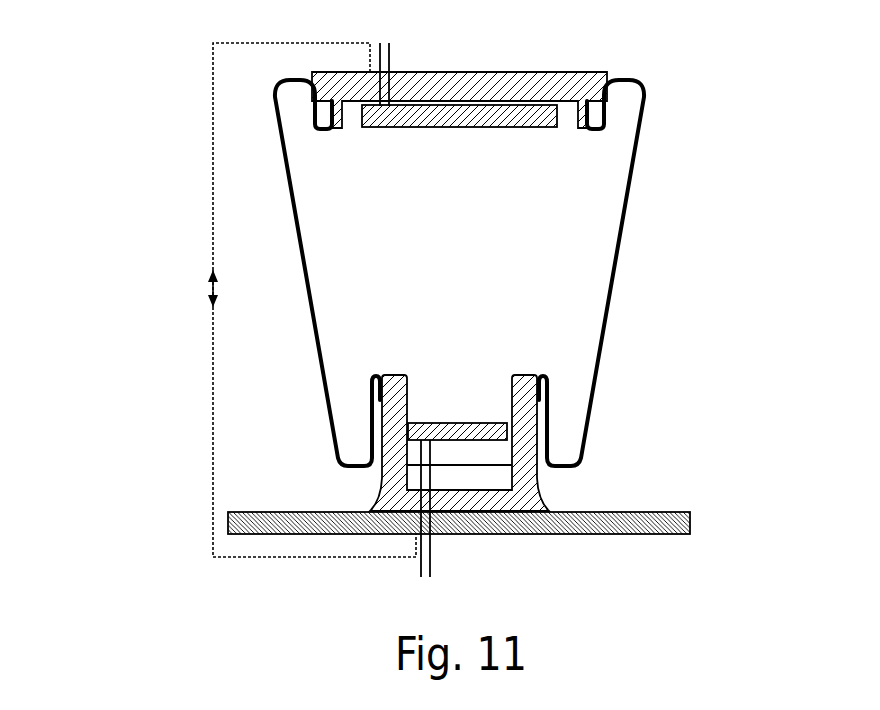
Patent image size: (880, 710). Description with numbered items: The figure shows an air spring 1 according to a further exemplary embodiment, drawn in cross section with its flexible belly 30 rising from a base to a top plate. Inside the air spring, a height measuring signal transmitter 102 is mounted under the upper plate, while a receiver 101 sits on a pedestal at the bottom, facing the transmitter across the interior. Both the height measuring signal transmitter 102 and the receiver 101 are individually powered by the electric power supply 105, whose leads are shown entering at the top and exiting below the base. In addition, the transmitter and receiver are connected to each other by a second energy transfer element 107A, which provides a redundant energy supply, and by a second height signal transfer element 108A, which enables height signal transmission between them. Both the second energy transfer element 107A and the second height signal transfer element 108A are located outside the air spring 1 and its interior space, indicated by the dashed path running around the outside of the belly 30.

The air spring 1 is at (168, 162).
The belly 30 is at (617, 255).
The receiver 101 is at (455, 423).
The height measuring signal transmitter 102 is at (517, 128).
The electric power supply 105 is at (390, 60).
The second energy transfer element 107A is at (213, 338).
The second height signal transfer element 108A is at (142, 339).